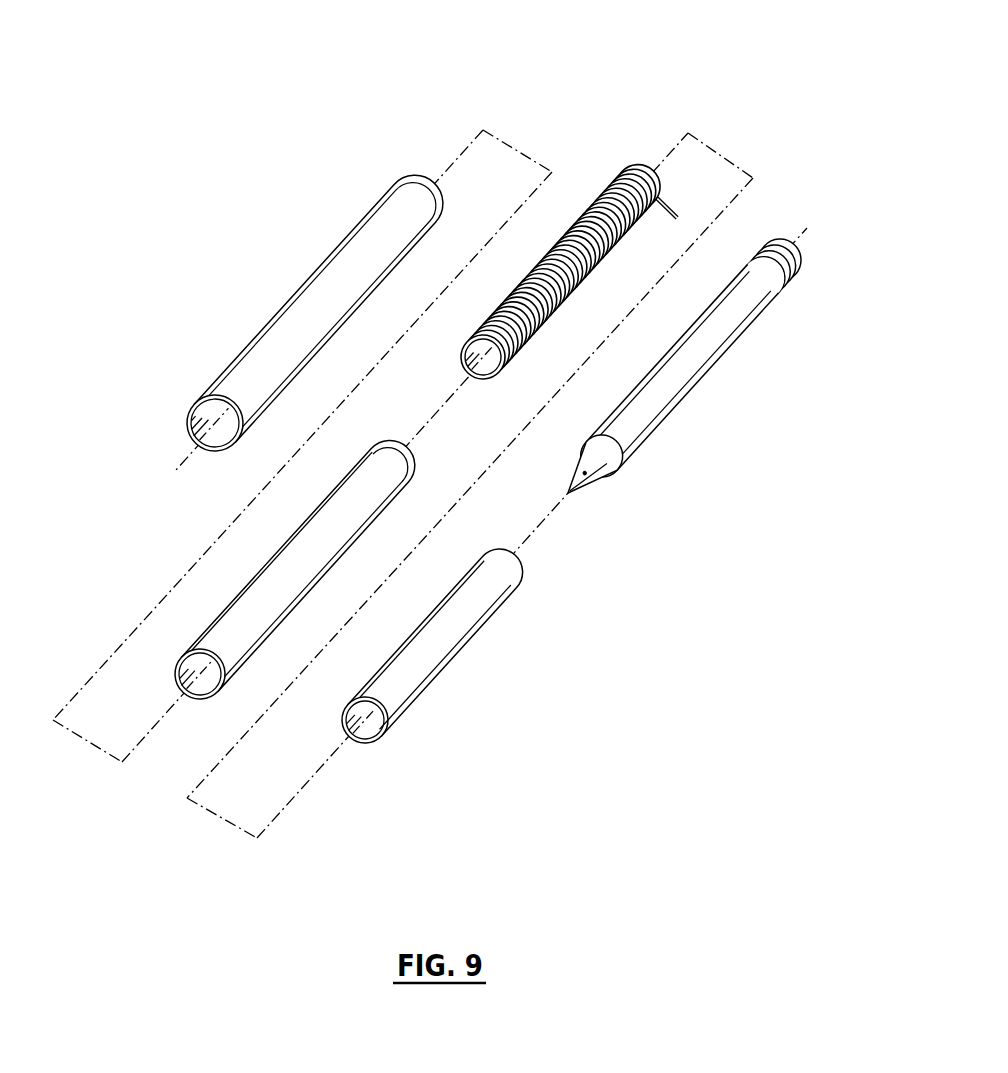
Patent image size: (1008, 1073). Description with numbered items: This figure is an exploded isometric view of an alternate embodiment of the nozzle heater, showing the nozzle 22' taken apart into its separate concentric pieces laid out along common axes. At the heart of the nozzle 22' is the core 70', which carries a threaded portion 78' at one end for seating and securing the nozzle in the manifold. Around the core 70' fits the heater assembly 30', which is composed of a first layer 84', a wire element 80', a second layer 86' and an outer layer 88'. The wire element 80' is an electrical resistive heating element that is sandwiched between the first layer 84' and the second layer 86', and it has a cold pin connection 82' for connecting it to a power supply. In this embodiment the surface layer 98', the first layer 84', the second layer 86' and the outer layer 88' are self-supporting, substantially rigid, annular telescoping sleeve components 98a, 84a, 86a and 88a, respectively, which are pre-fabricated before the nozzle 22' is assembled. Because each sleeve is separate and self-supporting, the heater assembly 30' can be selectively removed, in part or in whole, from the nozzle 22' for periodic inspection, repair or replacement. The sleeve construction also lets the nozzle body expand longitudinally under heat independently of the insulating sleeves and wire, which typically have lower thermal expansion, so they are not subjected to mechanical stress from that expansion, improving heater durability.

The nozzle 22' is at (702, 677).
The heater assembly 30' is at (479, 51).
The core 70' is at (709, 368).
The threaded portion 78' is at (800, 274).
The wire element 80' is at (579, 146).
The cold pin connection 82' is at (737, 197).
The first layer 84' is at (635, 258).
The first layer sleeve component 84a is at (486, 384).
The second layer 86' is at (314, 630).
The second layer sleeve component 86a is at (417, 448).
The outer layer 88' is at (288, 313).
The outer layer sleeve component 88a is at (213, 382).
The surface layer 98' is at (433, 649).
The surface layer sleeve component 98a is at (396, 697).